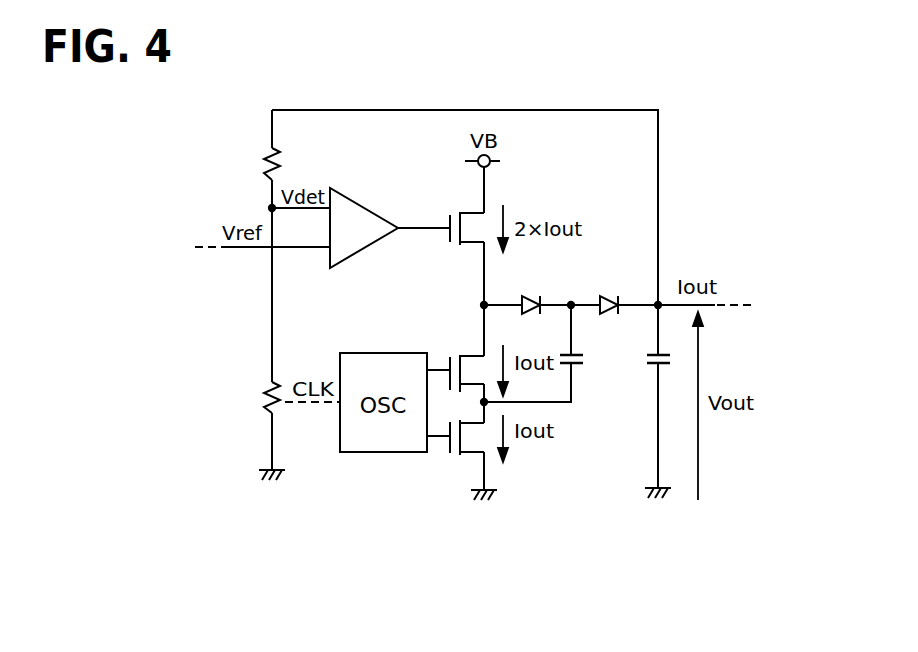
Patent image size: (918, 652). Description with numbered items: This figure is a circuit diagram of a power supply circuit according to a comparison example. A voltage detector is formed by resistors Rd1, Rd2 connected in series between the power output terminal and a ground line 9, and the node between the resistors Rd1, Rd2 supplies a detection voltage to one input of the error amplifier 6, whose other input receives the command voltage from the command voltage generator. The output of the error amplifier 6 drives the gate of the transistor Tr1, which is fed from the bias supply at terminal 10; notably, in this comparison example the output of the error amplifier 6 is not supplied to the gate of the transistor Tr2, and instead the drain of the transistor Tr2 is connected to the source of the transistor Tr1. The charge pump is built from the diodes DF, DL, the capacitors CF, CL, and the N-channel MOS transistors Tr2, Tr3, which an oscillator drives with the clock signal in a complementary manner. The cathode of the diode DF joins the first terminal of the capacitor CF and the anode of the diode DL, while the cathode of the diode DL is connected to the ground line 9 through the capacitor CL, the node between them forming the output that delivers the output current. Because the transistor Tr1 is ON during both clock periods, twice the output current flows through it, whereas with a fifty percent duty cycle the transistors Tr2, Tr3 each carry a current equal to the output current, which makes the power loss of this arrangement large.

The error amplifier 6 is at (358, 198).
The bias voltage terminal VB 10 is at (500, 162).
The ground line 9 is at (274, 466).
The resistor Rd1 is at (276, 164).
The resistor Rd2 is at (280, 388).
The transistor Tr1 is at (462, 212).
The N-channel MOS transistor Tr2 is at (466, 354).
The N-channel MOS transistor Tr3 is at (466, 456).
The diode DF is at (536, 296).
The diode DL is at (615, 296).
The capacitor CF is at (583, 360).
The capacitor CL is at (644, 364).